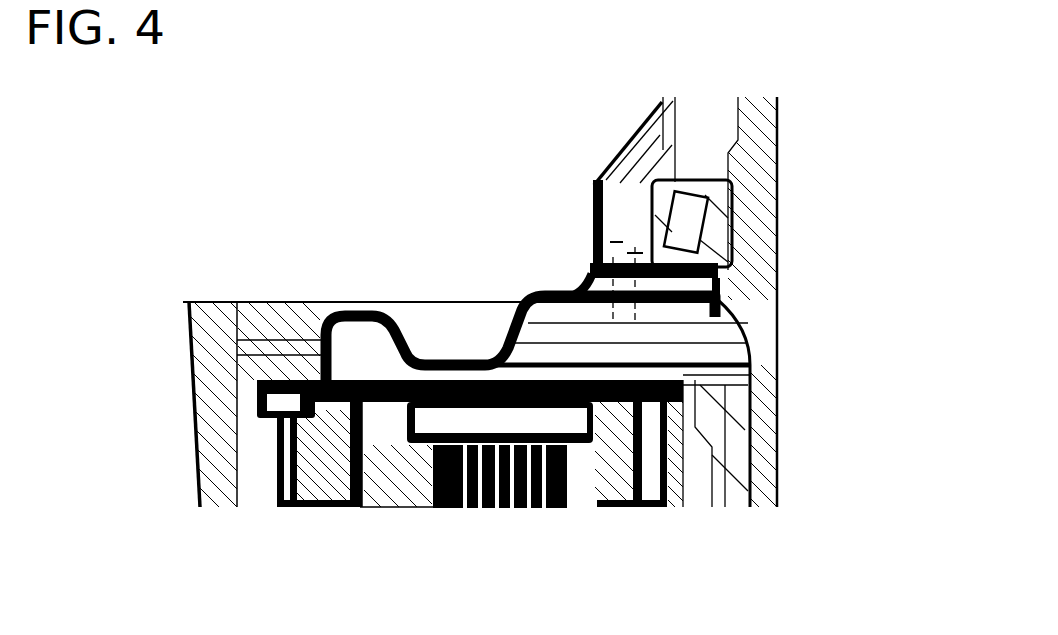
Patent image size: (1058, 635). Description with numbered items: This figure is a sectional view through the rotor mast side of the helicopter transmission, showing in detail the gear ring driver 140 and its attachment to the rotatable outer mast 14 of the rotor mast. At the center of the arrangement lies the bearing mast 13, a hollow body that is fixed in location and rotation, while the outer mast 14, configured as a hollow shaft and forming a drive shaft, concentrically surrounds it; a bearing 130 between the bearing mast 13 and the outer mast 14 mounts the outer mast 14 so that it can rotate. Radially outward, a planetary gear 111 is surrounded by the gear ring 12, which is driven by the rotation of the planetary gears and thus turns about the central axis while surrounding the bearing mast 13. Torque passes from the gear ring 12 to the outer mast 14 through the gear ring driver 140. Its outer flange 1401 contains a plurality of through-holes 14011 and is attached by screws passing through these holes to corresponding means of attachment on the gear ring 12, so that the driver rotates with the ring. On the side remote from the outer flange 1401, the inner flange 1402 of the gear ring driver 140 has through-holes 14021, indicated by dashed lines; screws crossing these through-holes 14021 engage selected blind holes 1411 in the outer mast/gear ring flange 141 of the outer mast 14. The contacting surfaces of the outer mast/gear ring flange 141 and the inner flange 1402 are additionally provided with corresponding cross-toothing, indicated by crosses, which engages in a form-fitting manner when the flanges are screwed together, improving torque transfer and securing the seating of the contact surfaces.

The gear ring 12 is at (336, 482).
The bearing mast 13 is at (867, 281).
The outer mast 14 is at (665, 163).
The planetary gear 111 is at (398, 478).
The bearing 130 is at (715, 223).
The gear ring driver 140 is at (320, 343).
The outer mast/gear ring flange 141 is at (642, 272).
The outer flange 1401 is at (270, 442).
The inner flange 1402 is at (607, 265).
The blind hole 1411 is at (717, 278).
The through-hole 14011 is at (295, 477).
The through-hole 14021 is at (617, 285).